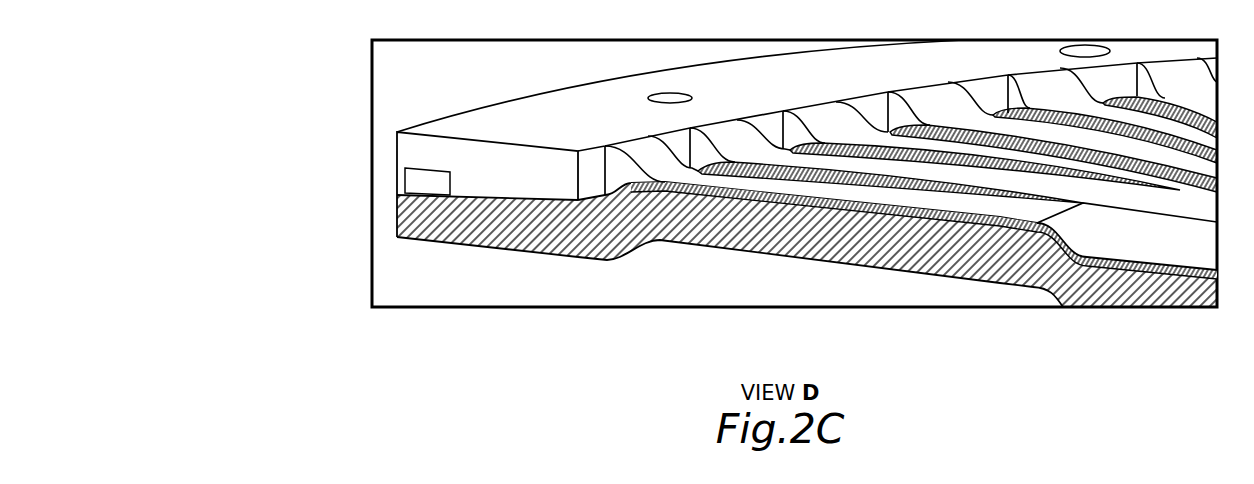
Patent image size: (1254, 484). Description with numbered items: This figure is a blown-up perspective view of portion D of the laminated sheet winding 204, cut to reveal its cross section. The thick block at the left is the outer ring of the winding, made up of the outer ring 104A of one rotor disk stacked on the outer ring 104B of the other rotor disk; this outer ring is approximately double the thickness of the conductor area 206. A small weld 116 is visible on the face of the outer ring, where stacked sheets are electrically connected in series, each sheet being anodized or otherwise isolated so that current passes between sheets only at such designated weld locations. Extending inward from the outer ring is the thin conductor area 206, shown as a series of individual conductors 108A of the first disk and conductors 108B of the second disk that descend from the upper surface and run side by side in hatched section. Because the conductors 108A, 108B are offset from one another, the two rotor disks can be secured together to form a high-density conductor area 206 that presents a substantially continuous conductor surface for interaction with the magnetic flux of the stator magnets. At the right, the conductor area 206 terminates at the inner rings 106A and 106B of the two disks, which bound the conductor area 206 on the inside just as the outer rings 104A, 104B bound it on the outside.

The laminated sheet winding 204 is at (326, 82).
The weld 116 is at (414, 183).
The outer ring 104A is at (467, 168).
The outer ring 104B is at (503, 247).
The conductor area 206 is at (786, 270).
The conductor 108A is at (845, 197).
The conductor 108B is at (907, 235).
The inner ring 106A is at (1133, 235).
The inner ring 106B is at (1188, 295).